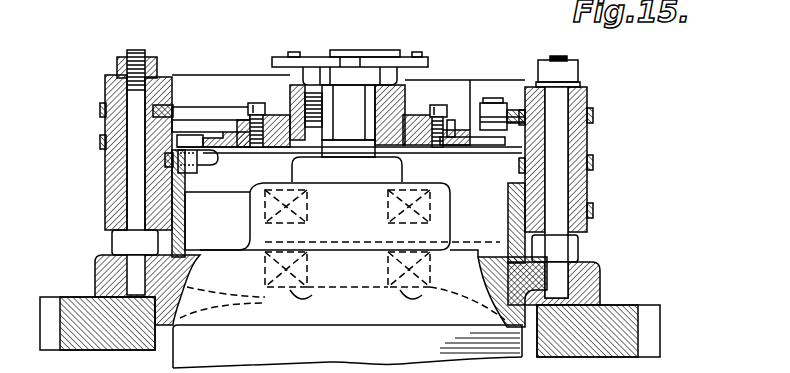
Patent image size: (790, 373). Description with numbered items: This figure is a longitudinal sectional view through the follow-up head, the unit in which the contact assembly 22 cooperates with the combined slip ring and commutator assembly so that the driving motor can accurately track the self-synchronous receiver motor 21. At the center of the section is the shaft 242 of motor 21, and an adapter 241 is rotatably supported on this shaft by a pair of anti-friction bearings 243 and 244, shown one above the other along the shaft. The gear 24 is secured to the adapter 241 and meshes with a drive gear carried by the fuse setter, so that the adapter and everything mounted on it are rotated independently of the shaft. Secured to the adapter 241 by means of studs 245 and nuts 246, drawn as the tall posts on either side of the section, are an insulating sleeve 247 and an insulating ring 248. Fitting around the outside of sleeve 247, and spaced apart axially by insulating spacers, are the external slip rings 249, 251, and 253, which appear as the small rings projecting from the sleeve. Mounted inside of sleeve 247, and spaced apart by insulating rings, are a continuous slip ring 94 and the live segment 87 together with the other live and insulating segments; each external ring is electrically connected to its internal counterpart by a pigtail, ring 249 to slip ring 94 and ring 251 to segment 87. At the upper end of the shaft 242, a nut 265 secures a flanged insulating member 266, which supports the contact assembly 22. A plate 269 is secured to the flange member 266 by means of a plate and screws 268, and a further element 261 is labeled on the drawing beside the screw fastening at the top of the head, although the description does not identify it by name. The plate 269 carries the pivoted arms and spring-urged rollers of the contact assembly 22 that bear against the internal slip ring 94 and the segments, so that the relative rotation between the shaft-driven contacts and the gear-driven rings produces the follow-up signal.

The self-synchronous receiver motor 21 is at (360, 355).
The contact assembly 22 is at (277, 95).
The gear 24 is at (657, 306).
The live segment 87 is at (198, 107).
The continuous slip ring 94 is at (383, 216).
The adapter 241 is at (587, 277).
The shaft 242 is at (265, 215).
The anti-friction bearing 243 is at (507, 180).
The anti-friction bearing 244 is at (342, 271).
The stud 245 is at (556, 143).
The nut 246 is at (578, 76).
The insulating sleeve 247 is at (587, 93).
The insulating ring 248 is at (580, 240).
The slip ring 249 is at (593, 212).
The slip ring 251 is at (593, 167).
The slip ring 253 is at (593, 118).
The clamp screw 261 is at (415, 113).
The nut 265 is at (370, 65).
The flanged insulating member 266 is at (403, 92).
The screw 268 is at (450, 110).
The plate 269 is at (223, 150).